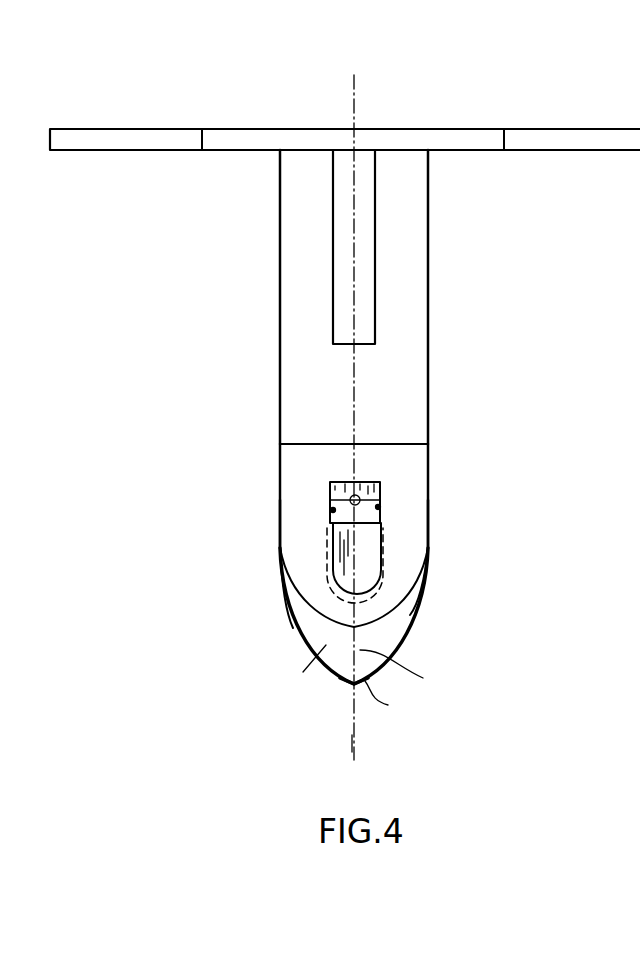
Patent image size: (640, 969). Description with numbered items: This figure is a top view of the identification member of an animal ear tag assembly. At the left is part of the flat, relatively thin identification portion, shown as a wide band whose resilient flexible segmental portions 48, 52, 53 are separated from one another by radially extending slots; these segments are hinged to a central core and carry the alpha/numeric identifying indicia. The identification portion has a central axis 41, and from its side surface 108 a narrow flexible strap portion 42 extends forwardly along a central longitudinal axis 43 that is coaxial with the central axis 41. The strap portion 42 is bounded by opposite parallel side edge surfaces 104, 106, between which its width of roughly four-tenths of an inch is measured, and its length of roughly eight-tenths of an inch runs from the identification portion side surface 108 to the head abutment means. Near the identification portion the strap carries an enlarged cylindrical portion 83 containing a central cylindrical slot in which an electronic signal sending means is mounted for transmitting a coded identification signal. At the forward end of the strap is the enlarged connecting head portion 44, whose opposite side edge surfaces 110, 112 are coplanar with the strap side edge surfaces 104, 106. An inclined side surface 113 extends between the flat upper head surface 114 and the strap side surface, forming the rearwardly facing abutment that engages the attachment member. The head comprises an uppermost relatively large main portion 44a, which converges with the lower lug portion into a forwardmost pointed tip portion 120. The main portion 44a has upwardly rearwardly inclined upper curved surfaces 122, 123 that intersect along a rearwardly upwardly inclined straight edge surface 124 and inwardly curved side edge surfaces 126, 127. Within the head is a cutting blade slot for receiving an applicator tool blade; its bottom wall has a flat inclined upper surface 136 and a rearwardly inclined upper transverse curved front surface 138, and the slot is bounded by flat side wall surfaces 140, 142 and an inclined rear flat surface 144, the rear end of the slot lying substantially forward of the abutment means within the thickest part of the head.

The central axis 41 is at (354, 113).
The flexible strap portion 42 is at (410, 290).
The central longitudinal axis 43 is at (360, 742).
The connecting head portion 44 is at (428, 553).
The main portion 44a is at (292, 673).
The segmental portion 48 is at (575, 135).
The segmental portion 52 is at (90, 142).
The segmental portion 53 is at (297, 135).
The enlarged cylindrical portion 83 is at (367, 219).
The side edge surface 104 is at (280, 333).
The side edge surface 106 is at (428, 390).
The identification portion side surface 108 is at (210, 152).
The side edge surface 110 is at (280, 530).
The side edge surface 112 is at (428, 521).
The inclined side surface 113 is at (298, 444).
The flat upper head surface 114 is at (413, 460).
The pointed tip portion 120 is at (354, 684).
The upper curved surface 122 is at (290, 598).
The upper curved surface 123 is at (408, 617).
The straight edge surface 124 is at (416, 675).
The inwardly curved side edge surface 126 is at (293, 628).
The inwardly curved side edge surface 127 is at (404, 706).
The flat inclined upper surface 136 is at (333, 556).
The upper transverse curved front surface 138 is at (372, 582).
The flat side wall surface 140 is at (332, 508).
The flat side wall surface 142 is at (380, 506).
The inclined rear flat surface 144 is at (354, 496).